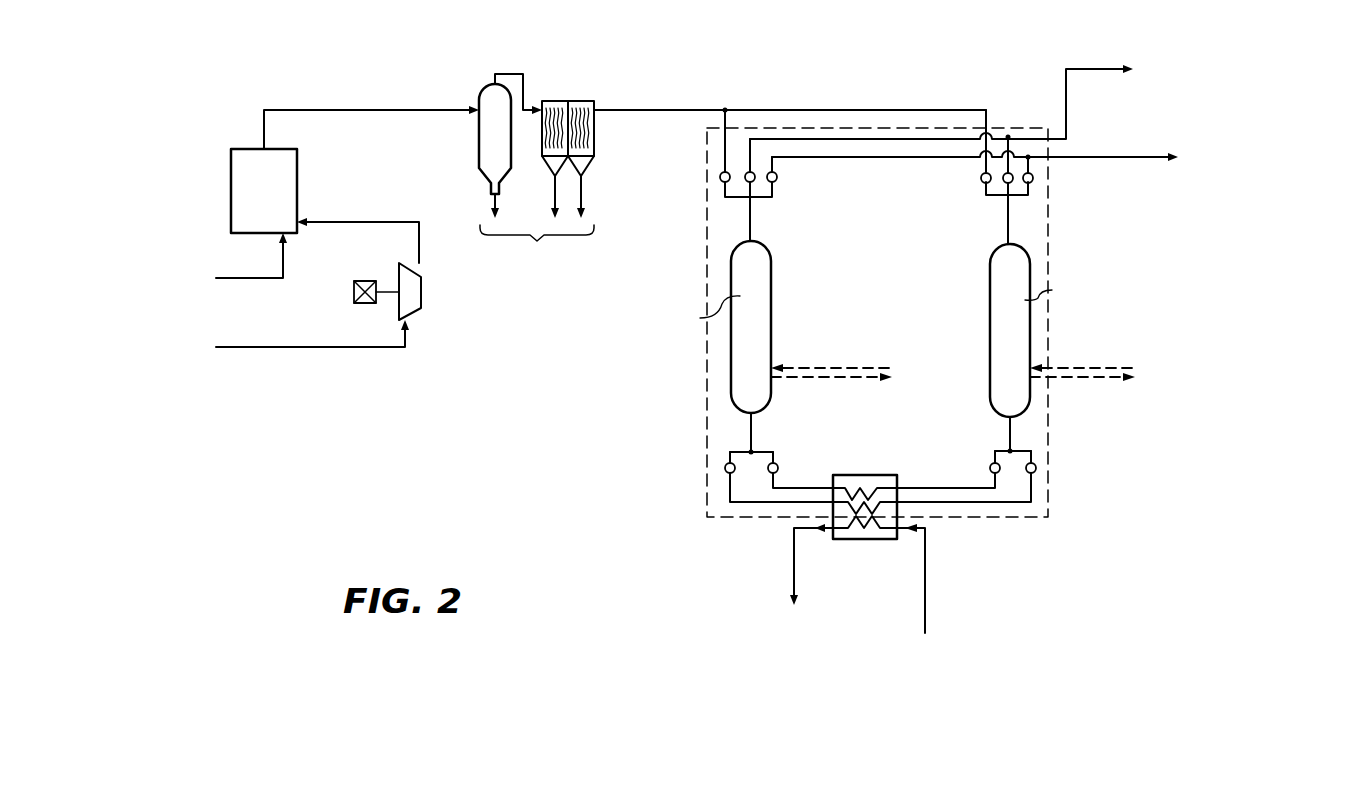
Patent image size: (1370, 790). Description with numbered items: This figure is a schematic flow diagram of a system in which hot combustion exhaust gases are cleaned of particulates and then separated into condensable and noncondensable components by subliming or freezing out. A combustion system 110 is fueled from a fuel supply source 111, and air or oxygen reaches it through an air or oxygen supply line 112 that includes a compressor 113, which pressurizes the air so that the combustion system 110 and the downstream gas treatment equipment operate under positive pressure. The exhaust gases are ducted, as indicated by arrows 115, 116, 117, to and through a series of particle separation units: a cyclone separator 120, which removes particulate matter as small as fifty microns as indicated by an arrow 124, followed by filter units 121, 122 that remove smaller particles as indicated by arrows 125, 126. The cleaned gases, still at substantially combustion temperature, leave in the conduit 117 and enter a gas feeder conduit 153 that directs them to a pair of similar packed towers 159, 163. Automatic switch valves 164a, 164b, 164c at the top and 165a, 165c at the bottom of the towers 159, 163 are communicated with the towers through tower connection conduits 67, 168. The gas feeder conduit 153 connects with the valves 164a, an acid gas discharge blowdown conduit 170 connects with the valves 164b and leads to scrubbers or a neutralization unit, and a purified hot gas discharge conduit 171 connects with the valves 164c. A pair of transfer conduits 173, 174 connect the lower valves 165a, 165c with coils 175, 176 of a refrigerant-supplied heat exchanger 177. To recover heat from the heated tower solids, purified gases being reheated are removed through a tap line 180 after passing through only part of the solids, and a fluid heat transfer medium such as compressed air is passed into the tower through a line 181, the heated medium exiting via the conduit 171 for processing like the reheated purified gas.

The combustion system 110 is at (281, 210).
The fuel supply source 111 is at (284, 258).
The air or oxygen supply line 112 is at (420, 250).
The compressor 113 is at (421, 297).
The exhaust gas duct arrow 115 is at (265, 120).
The exhaust gas duct arrow 116 is at (528, 91).
The conduit 117 is at (634, 109).
The cyclone separator 120 is at (481, 161).
The filter separation unit 121 is at (550, 167).
The filter separation unit 122 is at (586, 168).
The particulate matter discharge arrow 124 is at (495, 208).
The particulate matter discharge arrow 125 is at (555, 209).
The particulate matter discharge arrow 126 is at (582, 200).
The gas feeder conduit 153 is at (764, 109).
The packed tower 159 is at (767, 333).
The packed tower 163 is at (1025, 332).
The automatic switch valve 164a is at (721, 181).
The automatic switch valve 164b is at (746, 183).
The automatic switch valve 164c is at (792, 196).
The automatic switch valve 165a is at (728, 473).
The automatic switch valve 165c is at (778, 469).
The tower connection conduit 67 is at (751, 224).
The tower connection conduit 168 is at (752, 430).
The acid gas discharge blowdown conduit 170 is at (1066, 89).
The purified hot gas discharge conduit 171 is at (1117, 157).
The transfer conduit 173 is at (787, 503).
The transfer conduit 174 is at (780, 491).
The heat exchanger coil 175 is at (885, 502).
The heat exchanger coil 176 is at (883, 489).
The heat exchanger 177 is at (880, 541).
The tap line 180 is at (847, 378).
The heat transfer medium line 181 is at (847, 372).